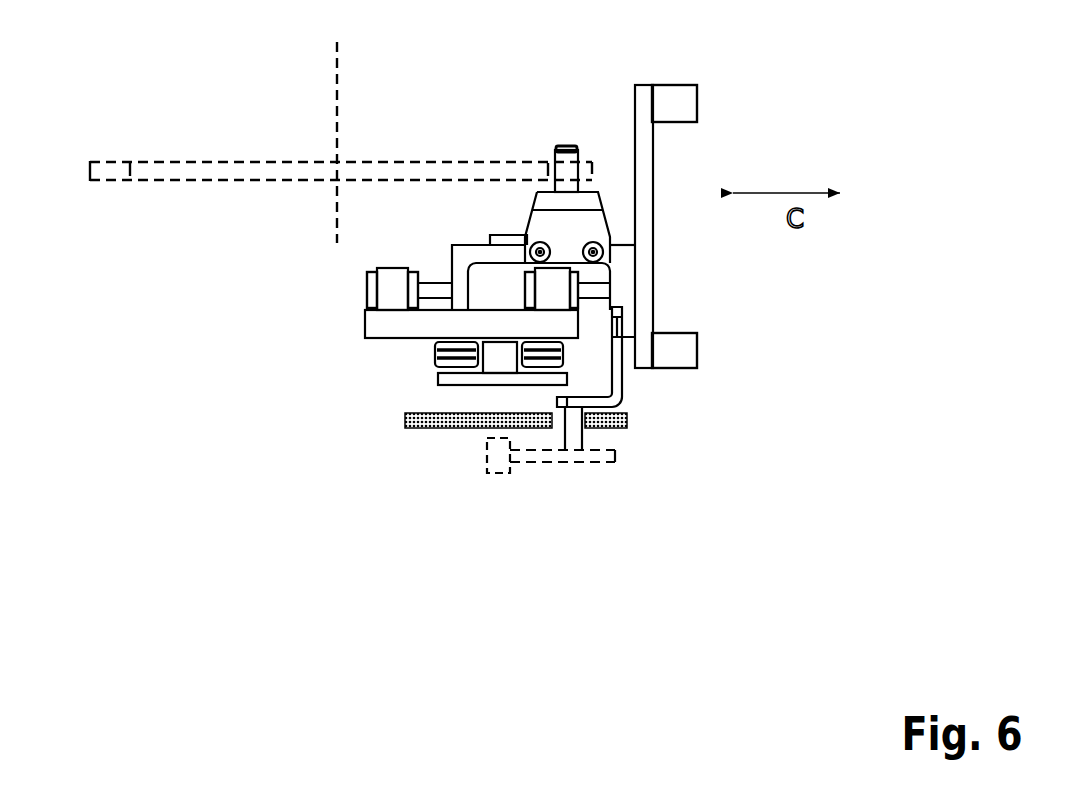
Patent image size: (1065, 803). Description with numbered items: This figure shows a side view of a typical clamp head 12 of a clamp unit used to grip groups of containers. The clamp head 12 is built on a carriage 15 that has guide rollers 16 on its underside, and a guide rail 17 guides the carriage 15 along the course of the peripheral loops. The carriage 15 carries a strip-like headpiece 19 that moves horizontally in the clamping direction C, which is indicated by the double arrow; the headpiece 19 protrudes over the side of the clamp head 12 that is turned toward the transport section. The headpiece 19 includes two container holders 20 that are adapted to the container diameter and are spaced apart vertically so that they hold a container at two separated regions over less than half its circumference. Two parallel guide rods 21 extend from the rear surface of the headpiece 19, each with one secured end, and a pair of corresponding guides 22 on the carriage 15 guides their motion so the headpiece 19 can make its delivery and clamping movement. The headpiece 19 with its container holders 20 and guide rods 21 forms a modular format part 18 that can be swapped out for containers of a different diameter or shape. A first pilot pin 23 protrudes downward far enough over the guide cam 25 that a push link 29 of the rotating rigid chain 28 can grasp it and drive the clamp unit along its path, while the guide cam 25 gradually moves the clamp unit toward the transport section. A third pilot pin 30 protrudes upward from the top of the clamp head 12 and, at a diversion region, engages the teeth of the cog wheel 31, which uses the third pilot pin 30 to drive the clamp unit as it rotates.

The clamp head 12 is at (468, 217).
The carriage 15 is at (378, 322).
The guide rollers 16 is at (437, 360).
The guide rail 17 is at (497, 358).
The format part 18 is at (742, 255).
The headpiece 19 is at (648, 265).
The container holders 20 is at (683, 107).
The guide rods 21 is at (438, 281).
The guides 22 is at (380, 292).
The first pilot pin 23 is at (567, 435).
The guide cam 25 is at (587, 428).
The rigid chain 28 is at (487, 463).
The push link 29 is at (583, 463).
The third pilot pin 30 is at (567, 157).
The cog wheel 31 is at (288, 168).